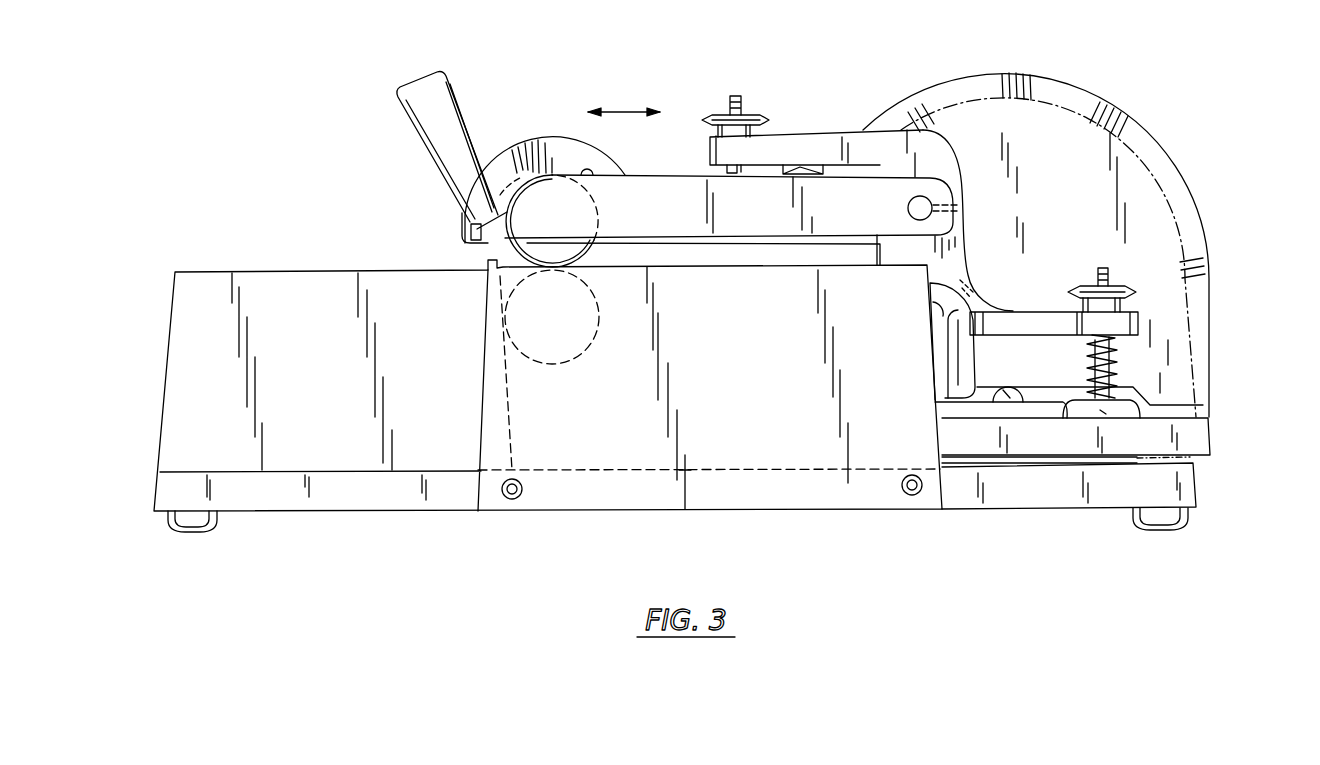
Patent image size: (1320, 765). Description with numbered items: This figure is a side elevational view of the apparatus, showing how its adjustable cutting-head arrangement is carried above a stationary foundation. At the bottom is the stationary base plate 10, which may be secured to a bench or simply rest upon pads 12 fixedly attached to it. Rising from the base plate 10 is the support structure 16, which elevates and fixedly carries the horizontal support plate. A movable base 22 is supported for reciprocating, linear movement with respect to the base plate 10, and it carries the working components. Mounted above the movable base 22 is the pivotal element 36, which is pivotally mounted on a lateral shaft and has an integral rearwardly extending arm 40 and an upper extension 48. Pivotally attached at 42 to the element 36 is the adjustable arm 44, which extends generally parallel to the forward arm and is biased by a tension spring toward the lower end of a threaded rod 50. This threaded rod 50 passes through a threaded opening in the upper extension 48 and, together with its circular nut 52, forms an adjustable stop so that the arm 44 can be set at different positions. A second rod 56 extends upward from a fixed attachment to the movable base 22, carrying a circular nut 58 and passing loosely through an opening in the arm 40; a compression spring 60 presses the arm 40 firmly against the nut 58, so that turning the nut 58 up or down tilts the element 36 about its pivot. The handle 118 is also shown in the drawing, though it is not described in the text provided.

The base plate 10 is at (1020, 490).
The pads 12 is at (208, 524).
The support structure 16 is at (180, 317).
The movable base 22 is at (1200, 436).
The element 36 is at (955, 257).
The arm 40 is at (1033, 323).
The pivotal attachment 42 is at (922, 208).
The adjustable arm 44 is at (890, 190).
The upper extension 48 is at (800, 140).
The threaded rod 50 is at (735, 93).
The circular nut 52 is at (756, 116).
The rod 56 is at (1100, 268).
The circular nut 58 is at (1113, 287).
The compression spring 60 is at (1115, 370).
The handle 118 is at (442, 97).